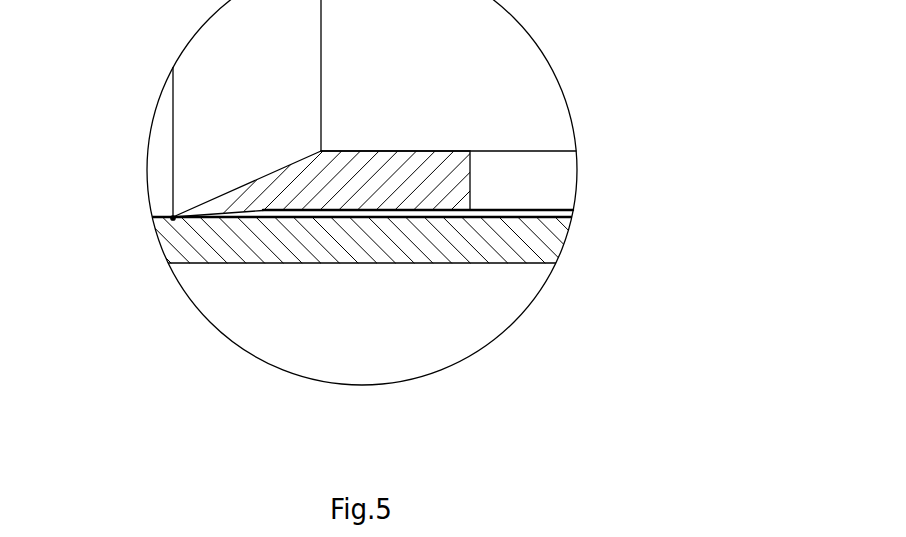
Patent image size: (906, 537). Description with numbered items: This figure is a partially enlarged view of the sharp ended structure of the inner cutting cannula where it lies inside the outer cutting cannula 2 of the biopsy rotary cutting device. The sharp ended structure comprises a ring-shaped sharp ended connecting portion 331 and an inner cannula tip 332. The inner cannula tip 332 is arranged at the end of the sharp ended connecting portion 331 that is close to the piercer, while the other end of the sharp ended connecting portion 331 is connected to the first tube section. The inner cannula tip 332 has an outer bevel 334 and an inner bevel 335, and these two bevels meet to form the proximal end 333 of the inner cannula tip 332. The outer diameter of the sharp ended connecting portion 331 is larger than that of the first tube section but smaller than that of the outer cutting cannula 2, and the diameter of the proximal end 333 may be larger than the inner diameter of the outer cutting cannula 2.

The outer cutting cannula 2 is at (518, 235).
The sharp ended connecting portion 331 is at (400, 184).
The inner cannula tip 332 is at (247, 199).
The proximal end 333 is at (173, 218).
The outer bevel 334 is at (263, 214).
The inner bevel 335 is at (296, 162).